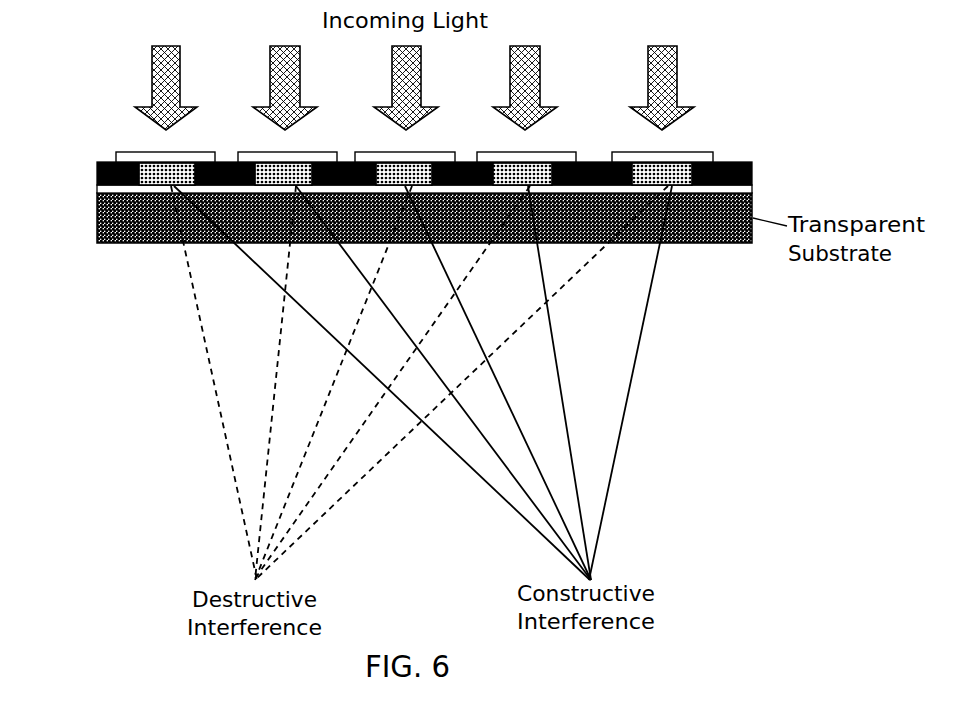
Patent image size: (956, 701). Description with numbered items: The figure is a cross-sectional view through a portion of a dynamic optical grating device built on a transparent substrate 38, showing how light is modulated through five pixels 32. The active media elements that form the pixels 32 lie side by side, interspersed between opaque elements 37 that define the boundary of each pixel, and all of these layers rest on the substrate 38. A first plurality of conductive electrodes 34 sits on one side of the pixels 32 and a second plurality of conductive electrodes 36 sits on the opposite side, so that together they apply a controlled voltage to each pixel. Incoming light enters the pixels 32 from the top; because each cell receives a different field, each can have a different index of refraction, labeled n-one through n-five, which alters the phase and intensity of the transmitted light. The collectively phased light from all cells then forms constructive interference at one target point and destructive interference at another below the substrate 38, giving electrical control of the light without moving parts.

The active media elements 32 is at (156, 162).
The first plurality of conductive electrodes 34 is at (709, 152).
The second plurality of conductive electrodes 36 is at (96, 189).
The first plurality of opaque elements 37 is at (753, 175).
The substrate 38 is at (97, 233).